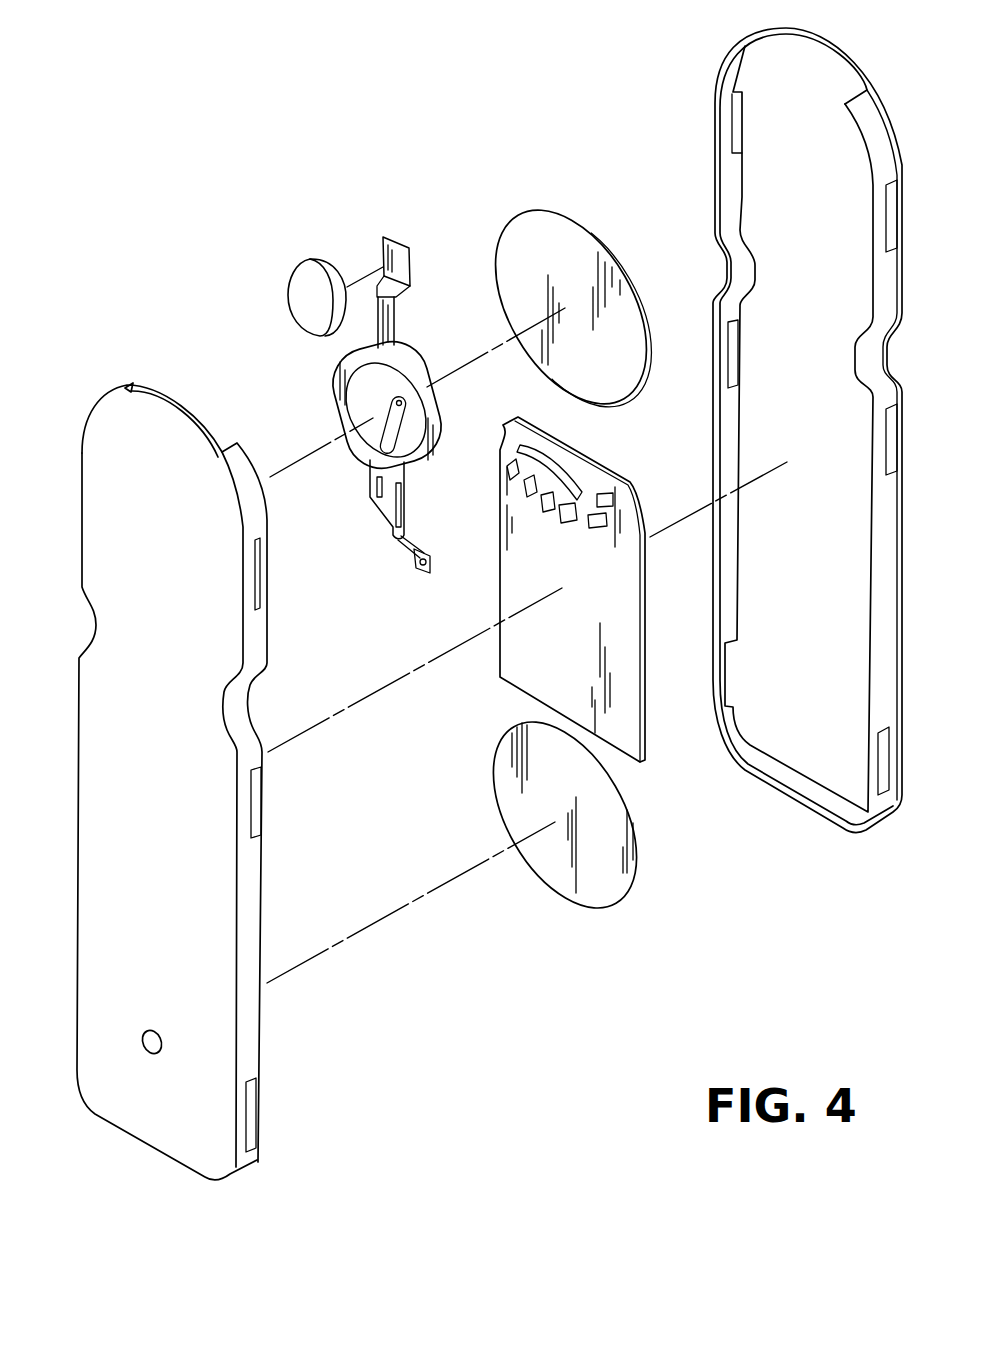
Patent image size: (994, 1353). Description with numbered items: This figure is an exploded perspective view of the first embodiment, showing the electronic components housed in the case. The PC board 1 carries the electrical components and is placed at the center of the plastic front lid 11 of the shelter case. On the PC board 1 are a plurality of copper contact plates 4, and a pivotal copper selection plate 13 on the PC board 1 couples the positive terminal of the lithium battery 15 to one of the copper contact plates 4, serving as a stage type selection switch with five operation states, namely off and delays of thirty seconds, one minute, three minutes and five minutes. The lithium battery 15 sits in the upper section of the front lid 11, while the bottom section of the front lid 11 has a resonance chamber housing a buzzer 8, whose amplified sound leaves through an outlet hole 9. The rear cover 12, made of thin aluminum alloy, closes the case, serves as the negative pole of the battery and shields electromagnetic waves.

The PC board 1 is at (609, 640).
The copper contact plates 4 is at (573, 480).
The buzzer 8 is at (523, 868).
The outlet hole 9 is at (148, 1052).
The plastic front lid 11 is at (192, 789).
The rear cover 12 is at (703, 192).
The pivotal copper selection plate 13 is at (355, 463).
The lithium battery 15 is at (522, 214).